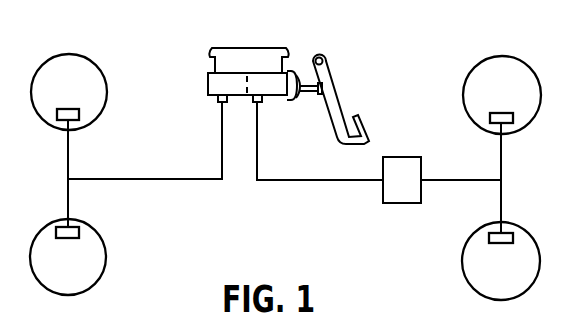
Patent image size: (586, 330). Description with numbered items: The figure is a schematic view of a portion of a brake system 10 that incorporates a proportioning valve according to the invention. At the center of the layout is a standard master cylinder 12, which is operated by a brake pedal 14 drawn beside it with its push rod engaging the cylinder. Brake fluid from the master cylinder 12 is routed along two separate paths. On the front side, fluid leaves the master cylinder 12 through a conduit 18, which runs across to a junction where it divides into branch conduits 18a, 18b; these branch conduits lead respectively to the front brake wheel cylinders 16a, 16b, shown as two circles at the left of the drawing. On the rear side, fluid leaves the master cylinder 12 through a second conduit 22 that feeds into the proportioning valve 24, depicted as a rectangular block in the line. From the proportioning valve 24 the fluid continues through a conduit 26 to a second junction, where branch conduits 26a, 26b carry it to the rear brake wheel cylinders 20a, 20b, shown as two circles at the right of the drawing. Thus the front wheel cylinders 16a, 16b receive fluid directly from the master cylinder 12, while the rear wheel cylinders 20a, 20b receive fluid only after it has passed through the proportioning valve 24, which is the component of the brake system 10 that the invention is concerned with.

The brake system 10 is at (418, 66).
The master cylinder 12 is at (251, 64).
The brake pedal 14 is at (338, 99).
The front brake wheel cylinder 16a is at (78, 95).
The front brake wheel cylinder 16b is at (77, 280).
The conduit 18 is at (187, 179).
The branch conduit 18a is at (68, 156).
The branch conduit 18b is at (68, 198).
The rear brake wheel cylinder 20a is at (510, 98).
The rear brake wheel cylinder 20b is at (509, 283).
The conduit 22 is at (305, 180).
The proportioning valve 24 is at (401, 203).
The conduit 26 is at (457, 180).
The branch conduit 26a is at (501, 158).
The branch conduit 26b is at (501, 200).